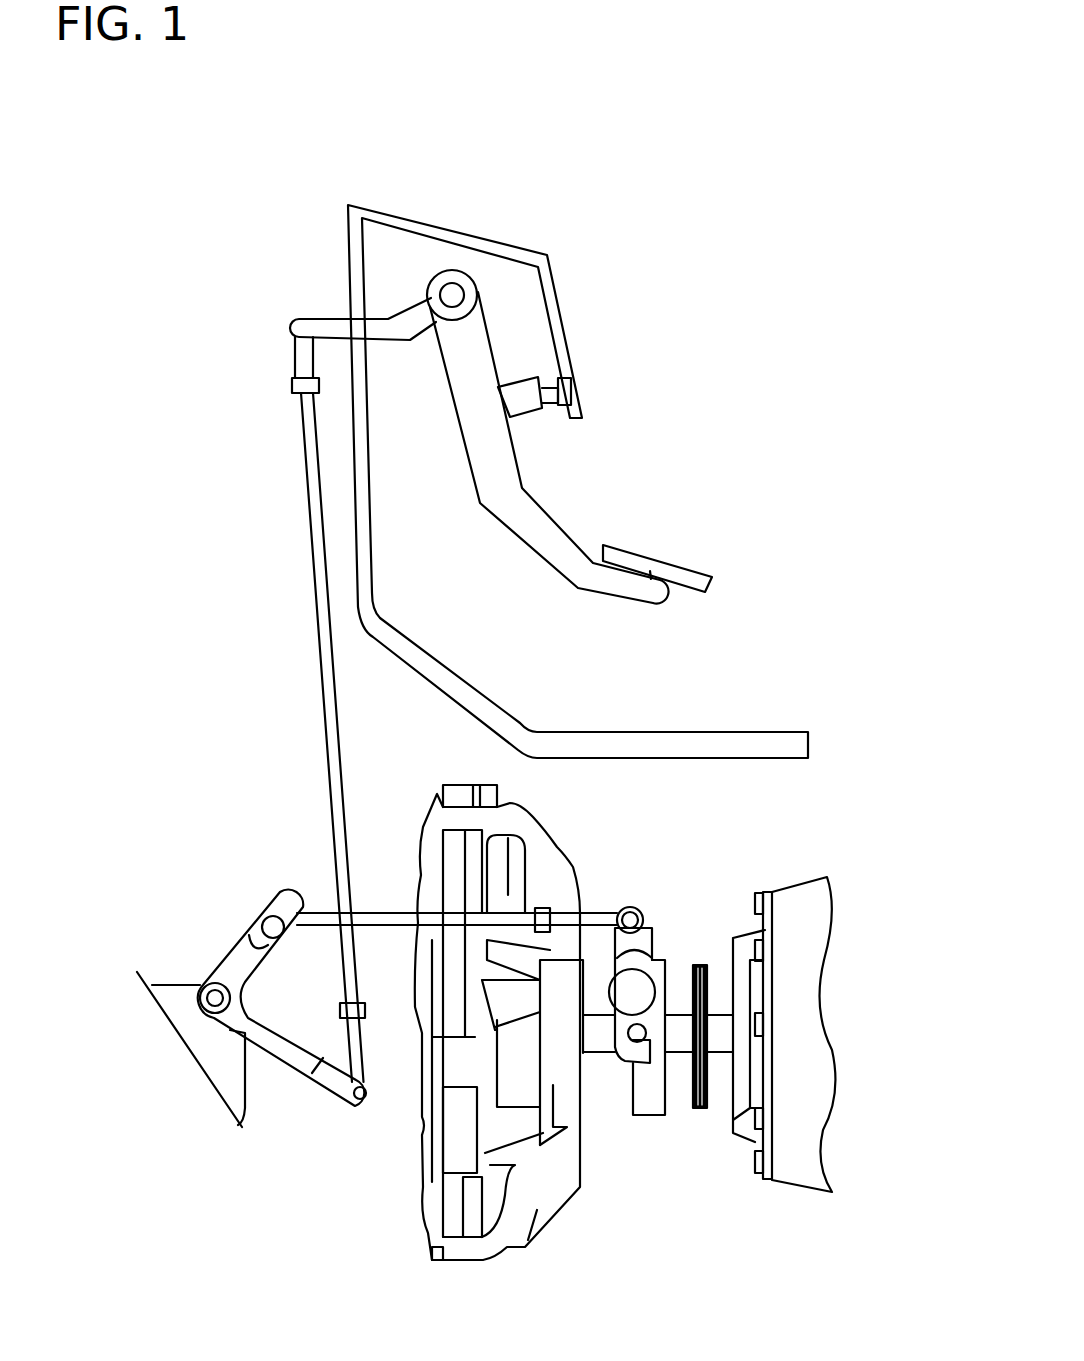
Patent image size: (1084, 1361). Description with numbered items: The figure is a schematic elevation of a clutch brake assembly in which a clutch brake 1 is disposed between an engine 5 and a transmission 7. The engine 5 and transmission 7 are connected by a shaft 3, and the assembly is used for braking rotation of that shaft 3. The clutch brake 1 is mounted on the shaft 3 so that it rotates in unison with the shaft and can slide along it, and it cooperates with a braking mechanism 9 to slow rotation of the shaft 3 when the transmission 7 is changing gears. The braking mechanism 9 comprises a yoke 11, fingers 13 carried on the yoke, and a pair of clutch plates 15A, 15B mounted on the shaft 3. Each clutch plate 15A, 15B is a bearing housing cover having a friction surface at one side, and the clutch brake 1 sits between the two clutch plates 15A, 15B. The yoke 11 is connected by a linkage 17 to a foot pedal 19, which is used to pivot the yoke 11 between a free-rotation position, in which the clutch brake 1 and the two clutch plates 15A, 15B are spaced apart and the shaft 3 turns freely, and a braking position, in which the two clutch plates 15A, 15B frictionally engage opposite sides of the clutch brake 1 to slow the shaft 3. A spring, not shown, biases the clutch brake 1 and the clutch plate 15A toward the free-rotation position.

The clutch brake 1 is at (706, 1110).
The shaft 3 is at (720, 1022).
The engine 5 is at (421, 1195).
The transmission 7 is at (806, 1070).
The braking mechanism 9 is at (733, 866).
The yoke 11 is at (660, 933).
The fingers 13 is at (622, 1055).
The clutch plate 15A is at (653, 1105).
The clutch plate 15B is at (748, 940).
The linkage 17 is at (318, 884).
The foot pedal 19 is at (662, 567).